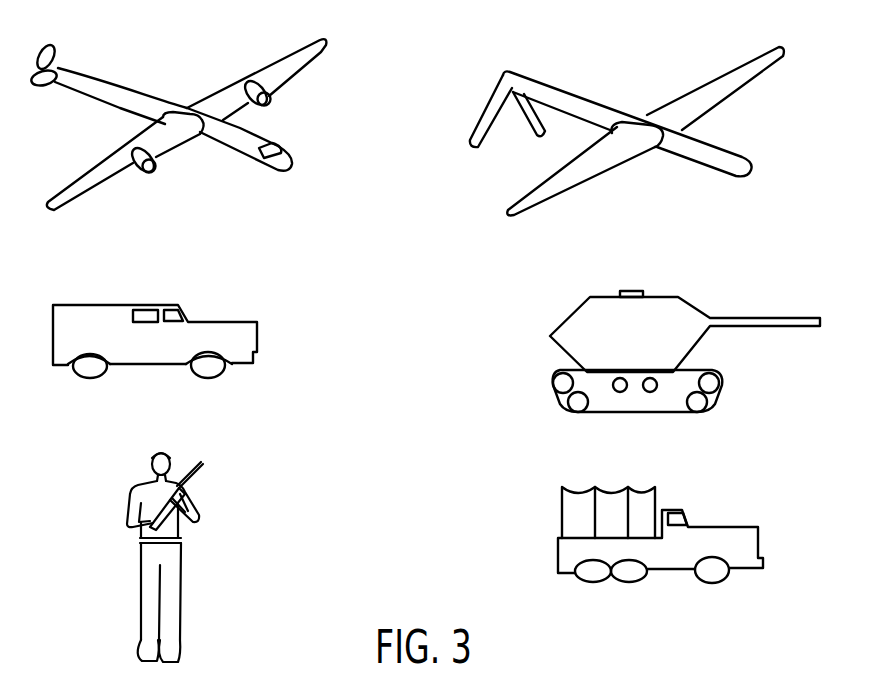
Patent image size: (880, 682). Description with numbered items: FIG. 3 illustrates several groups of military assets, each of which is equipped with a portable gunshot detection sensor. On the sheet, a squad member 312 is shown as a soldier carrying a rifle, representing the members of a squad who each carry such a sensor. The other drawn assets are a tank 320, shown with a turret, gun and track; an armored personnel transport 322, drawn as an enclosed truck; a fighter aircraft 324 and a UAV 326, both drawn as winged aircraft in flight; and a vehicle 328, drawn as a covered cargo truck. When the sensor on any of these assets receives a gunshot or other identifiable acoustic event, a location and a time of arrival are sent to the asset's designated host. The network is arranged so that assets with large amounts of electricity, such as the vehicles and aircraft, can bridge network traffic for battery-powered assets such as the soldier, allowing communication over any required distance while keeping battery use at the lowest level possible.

The squad member 312 is at (177, 468).
The tank 320 is at (692, 313).
The armored personnel transport 322 is at (188, 312).
The fighter aircraft 324 is at (208, 89).
The UAV 326 is at (697, 90).
The vehicle 328 is at (707, 528).